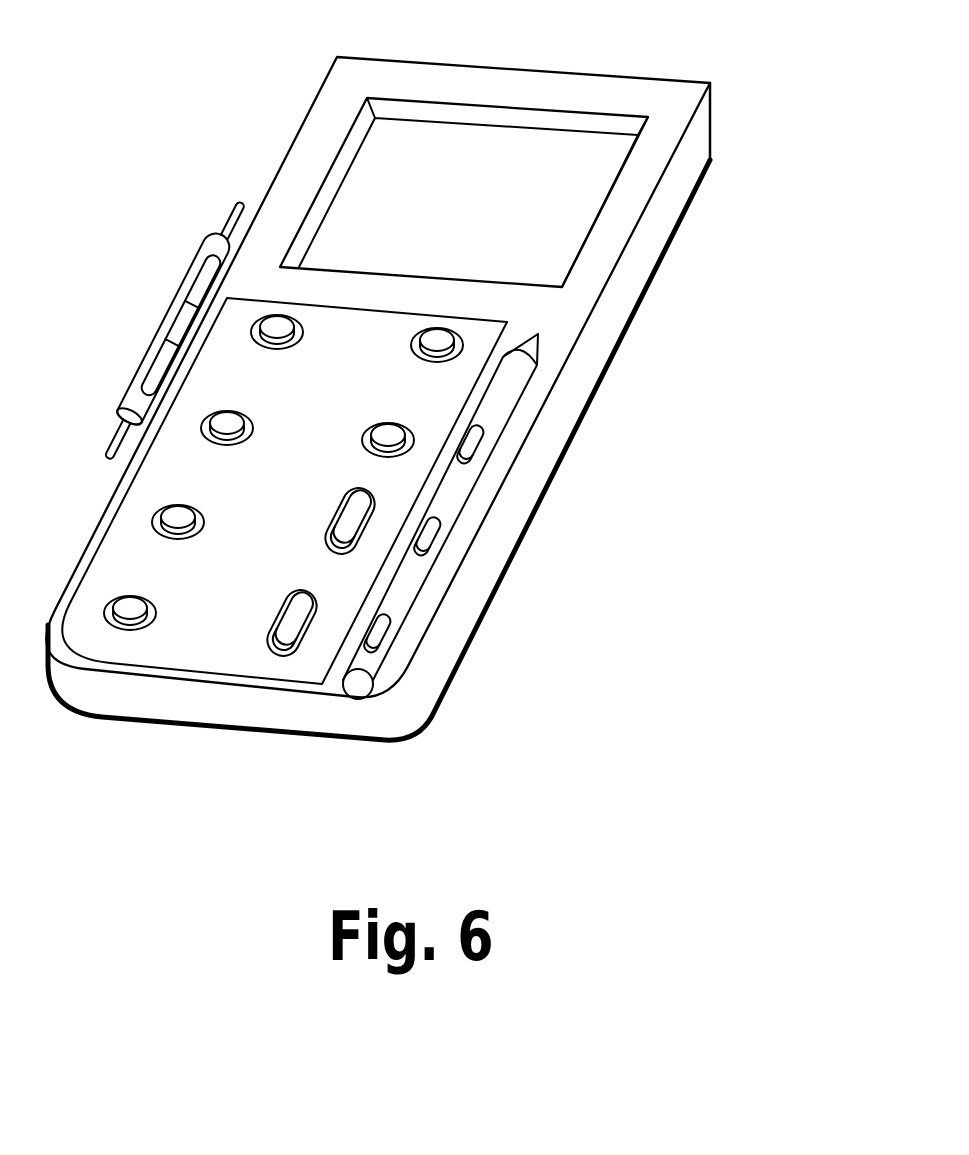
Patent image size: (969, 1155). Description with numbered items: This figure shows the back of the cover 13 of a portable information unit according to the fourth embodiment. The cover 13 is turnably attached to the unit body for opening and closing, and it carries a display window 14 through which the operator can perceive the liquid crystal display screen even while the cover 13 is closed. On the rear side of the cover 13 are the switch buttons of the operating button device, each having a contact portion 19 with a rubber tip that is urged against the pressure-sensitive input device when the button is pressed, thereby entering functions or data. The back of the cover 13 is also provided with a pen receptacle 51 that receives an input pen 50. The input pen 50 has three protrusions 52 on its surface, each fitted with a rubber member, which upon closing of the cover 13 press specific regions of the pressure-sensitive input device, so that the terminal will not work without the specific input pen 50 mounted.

The cover 13 is at (697, 148).
The display window 14 is at (485, 113).
The contact portion 19 is at (278, 350).
The input pen 50 is at (503, 400).
The pen receptacle 51 is at (382, 683).
The protrusions 52 is at (470, 447).